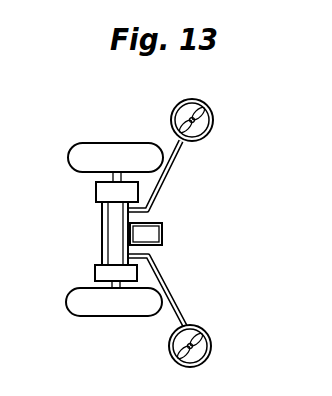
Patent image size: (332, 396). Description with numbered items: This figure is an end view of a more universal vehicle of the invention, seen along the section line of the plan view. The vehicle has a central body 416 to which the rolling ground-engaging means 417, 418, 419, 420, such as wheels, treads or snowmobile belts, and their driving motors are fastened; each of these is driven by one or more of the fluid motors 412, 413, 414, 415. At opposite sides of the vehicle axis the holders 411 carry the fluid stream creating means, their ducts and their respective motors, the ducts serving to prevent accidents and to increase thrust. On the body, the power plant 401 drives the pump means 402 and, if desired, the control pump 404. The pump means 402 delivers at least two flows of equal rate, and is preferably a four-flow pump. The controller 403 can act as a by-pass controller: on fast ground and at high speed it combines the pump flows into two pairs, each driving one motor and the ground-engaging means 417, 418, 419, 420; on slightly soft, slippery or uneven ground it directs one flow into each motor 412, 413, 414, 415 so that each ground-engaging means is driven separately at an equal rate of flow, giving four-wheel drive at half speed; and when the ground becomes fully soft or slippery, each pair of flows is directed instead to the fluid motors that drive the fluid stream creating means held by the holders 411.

The power plant 401 is at (178, 238).
The pump means 402 is at (178, 247).
The controller 403 is at (178, 248).
The control pump 404 is at (163, 228).
The holders 411 is at (176, 168).
The fluid motor 412 is at (84, 200).
The fluid motor 413 is at (83, 278).
The fluid motor 414 is at (95, 271).
The fluid motor 415 is at (96, 193).
The body 416 is at (102, 230).
The ground-engaging means 417 is at (92, 145).
The ground-engaging means 418 is at (111, 324).
The ground-engaging means 419 is at (88, 303).
The ground-engaging means 420 is at (85, 152).